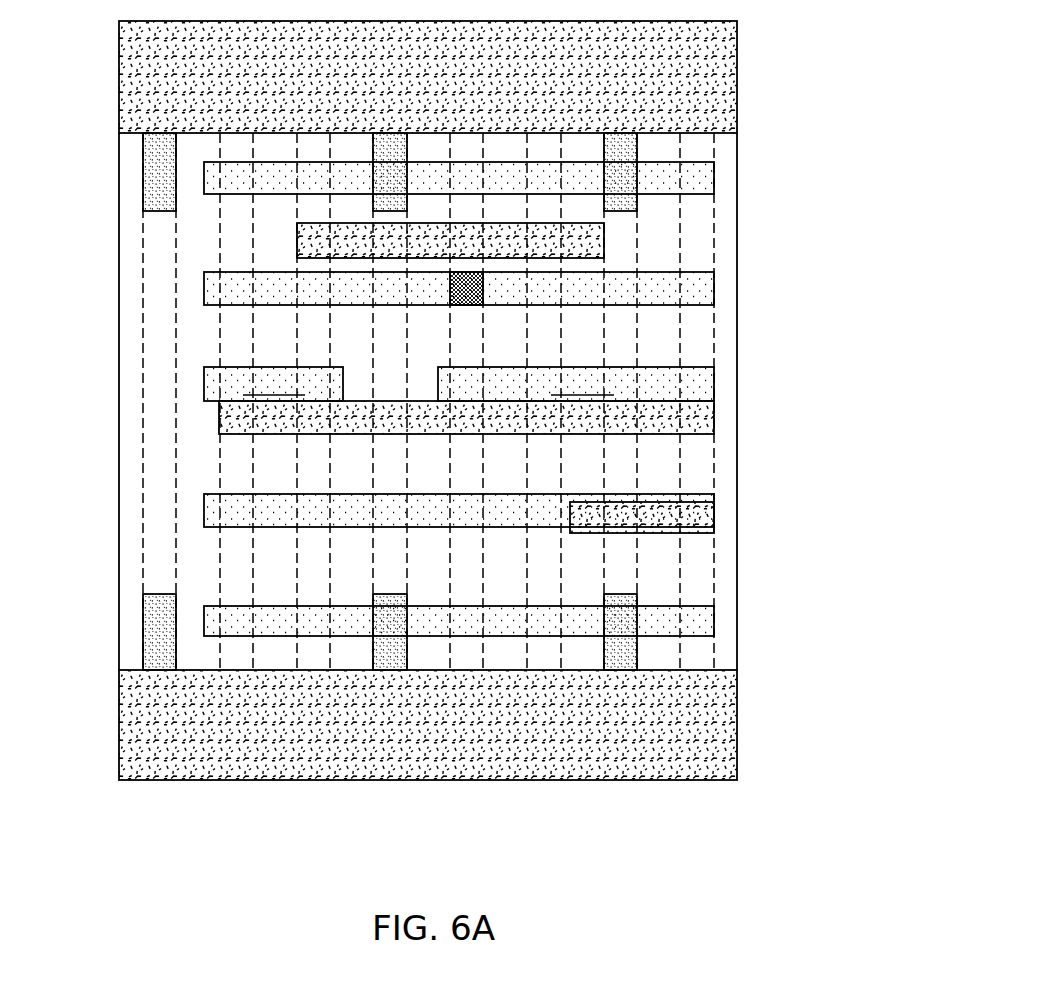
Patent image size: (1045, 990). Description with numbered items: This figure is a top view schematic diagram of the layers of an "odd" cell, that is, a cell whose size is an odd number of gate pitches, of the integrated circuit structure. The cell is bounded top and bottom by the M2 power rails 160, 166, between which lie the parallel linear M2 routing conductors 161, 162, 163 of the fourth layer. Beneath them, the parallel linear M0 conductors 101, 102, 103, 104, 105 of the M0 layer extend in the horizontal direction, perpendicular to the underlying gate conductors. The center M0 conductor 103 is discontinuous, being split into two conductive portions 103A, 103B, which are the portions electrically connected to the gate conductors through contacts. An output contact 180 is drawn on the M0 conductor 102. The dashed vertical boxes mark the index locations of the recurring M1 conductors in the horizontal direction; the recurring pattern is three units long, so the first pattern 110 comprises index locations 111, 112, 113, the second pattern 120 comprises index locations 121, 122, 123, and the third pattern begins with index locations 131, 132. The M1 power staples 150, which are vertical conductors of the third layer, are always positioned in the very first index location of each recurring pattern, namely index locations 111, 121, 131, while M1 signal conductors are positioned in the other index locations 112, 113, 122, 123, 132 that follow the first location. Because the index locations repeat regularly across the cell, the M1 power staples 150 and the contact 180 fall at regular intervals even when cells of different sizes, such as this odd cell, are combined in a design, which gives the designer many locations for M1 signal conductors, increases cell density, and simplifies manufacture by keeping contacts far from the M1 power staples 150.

The M2 power rail 160 is at (119, 75).
The M2 power rail 166 is at (119, 725).
The M0 conductor 101 is at (204, 178).
The M0 conductor 102 is at (204, 288).
The center discontinuous M0 conductor 103 is at (379, 384).
The conductive portion of the center discontinuous M0 conductor 103A is at (273, 384).
The conductive portion of the center discontinuous M0 conductor 103B is at (576, 384).
The M0 conductor 104 is at (204, 510).
The M0 conductor 105 is at (204, 620).
The M1 power staple 150 is at (177, 145).
The M2 conductor 161 is at (604, 240).
The M2 conductor 162 is at (714, 413).
The M2 conductor 163 is at (714, 513).
The output contact 180 is at (490, 288).
The recurring pattern of index locations 110 is at (238, 507).
The recurring pattern of index locations 120 is at (467, 507).
The index location 111 is at (160, 672).
The index location 112 is at (236, 672).
The index location 113 is at (317, 480).
The index location 121 is at (389, 672).
The index location 122 is at (467, 672).
The index location 123 is at (547, 480).
The index location 131 is at (620, 672).
The index location 132 is at (697, 672).